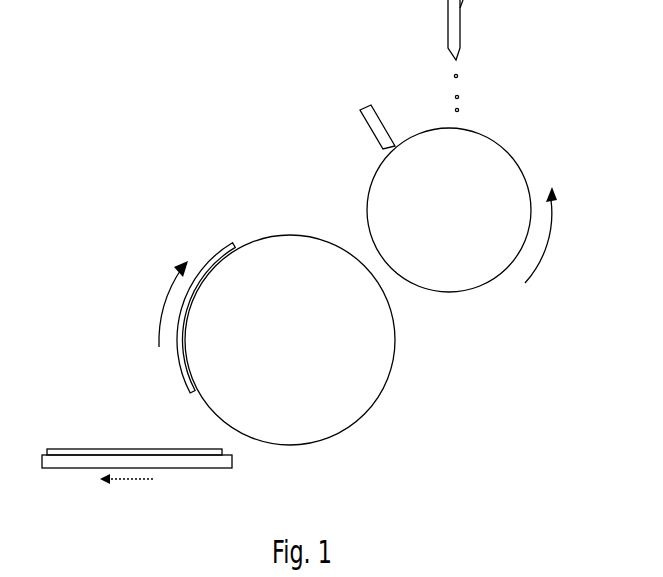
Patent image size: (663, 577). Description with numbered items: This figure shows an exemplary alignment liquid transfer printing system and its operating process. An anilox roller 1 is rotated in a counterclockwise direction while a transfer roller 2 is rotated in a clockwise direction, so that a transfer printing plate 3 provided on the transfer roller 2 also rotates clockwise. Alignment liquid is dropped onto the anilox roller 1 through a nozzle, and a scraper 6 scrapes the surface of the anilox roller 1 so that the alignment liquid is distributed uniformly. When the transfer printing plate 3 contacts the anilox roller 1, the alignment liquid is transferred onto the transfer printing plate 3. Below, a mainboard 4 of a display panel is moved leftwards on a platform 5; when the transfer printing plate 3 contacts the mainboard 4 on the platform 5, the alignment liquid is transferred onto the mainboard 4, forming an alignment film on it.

The anilox roller 1 is at (513, 157).
The transfer roller 2 is at (388, 380).
The transfer printing plate 3 is at (222, 255).
The mainboard 4 is at (92, 449).
The platform 5 is at (88, 468).
The scraper 6 is at (360, 112).